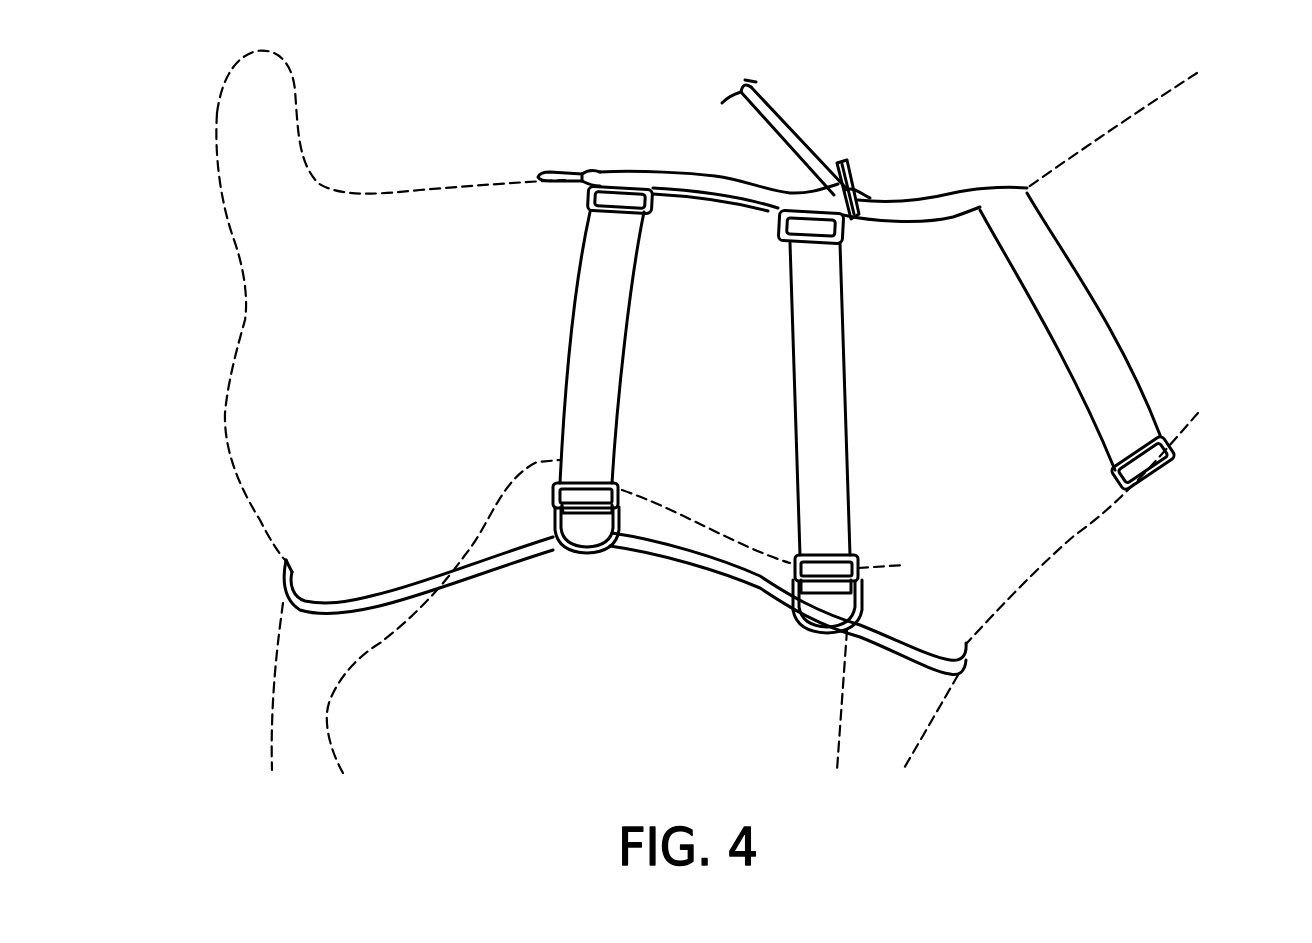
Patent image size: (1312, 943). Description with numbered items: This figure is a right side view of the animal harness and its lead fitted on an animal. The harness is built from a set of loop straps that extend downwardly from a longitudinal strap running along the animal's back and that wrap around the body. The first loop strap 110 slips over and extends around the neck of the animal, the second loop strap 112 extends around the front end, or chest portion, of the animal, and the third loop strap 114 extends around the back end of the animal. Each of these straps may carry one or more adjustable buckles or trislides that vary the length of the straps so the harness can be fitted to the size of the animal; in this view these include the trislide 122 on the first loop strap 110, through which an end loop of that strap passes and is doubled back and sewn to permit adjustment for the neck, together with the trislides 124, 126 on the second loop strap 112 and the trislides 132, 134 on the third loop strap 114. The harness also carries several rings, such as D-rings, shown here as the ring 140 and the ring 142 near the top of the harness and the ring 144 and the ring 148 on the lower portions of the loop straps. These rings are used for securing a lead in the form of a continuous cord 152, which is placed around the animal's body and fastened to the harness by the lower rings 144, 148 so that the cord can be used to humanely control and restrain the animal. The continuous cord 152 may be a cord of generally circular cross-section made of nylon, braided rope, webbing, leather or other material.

The first loop strap 110 is at (1085, 323).
The second loop strap 112 is at (827, 402).
The third loop strap 114 is at (595, 338).
The trislide 122 is at (1170, 452).
The trislide 124 is at (840, 242).
The trislide 126 is at (857, 558).
The trislide 132 is at (655, 208).
The trislide 134 is at (617, 492).
The ring 140 is at (847, 167).
The ring 142 is at (546, 172).
The ring 144 is at (822, 632).
The ring 148 is at (590, 555).
The continuous cord 152 is at (690, 563).